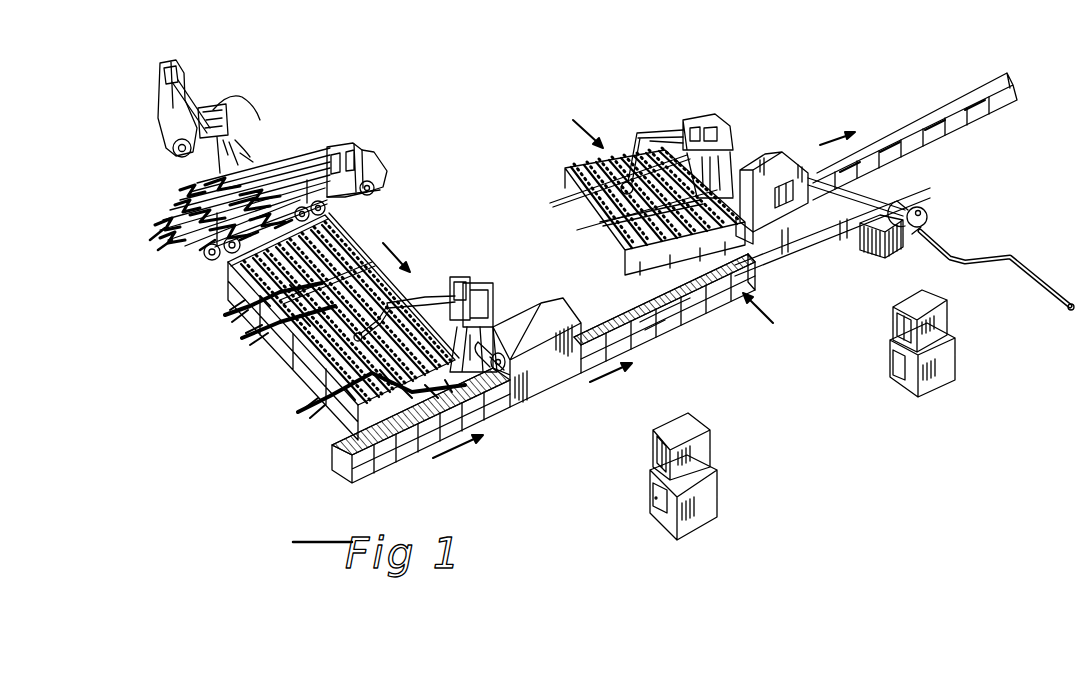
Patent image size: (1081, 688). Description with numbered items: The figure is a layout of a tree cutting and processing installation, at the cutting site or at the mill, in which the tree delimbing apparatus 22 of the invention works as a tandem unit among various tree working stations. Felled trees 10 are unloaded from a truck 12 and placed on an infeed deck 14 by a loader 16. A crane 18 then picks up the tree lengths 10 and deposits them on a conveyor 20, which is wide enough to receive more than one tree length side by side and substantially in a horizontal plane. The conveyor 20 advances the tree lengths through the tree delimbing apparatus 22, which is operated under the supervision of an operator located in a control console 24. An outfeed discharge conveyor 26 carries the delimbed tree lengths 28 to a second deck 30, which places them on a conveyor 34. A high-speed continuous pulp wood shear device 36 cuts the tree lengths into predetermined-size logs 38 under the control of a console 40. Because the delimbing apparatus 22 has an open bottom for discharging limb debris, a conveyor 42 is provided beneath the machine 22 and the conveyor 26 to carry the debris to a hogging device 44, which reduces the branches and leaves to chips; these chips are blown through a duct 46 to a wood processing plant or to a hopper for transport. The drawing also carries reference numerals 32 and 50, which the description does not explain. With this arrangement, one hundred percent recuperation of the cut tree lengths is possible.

The felled trees 10 is at (281, 160).
The truck 12 is at (356, 152).
The infeed deck 14 is at (356, 239).
The loader 16 is at (203, 80).
The crane 18 is at (427, 296).
The conveyor 20 is at (332, 447).
The tree delimbing apparatus 22 is at (518, 308).
The control console 24 is at (707, 430).
The outfeed discharge conveyor 26 is at (641, 313).
The delimbed tree lengths 28 is at (699, 287).
The second deck 30 is at (742, 227).
The second crane 32 is at (707, 116).
The conveyor 34 is at (621, 254).
The high-speed continuous pulp wood shear device 36 is at (767, 157).
The predetermined-size logs 38 is at (910, 120).
The console 40 is at (945, 307).
The conveyor 42 is at (660, 318).
The hogging device 44 is at (931, 199).
The duct 46 is at (1028, 261).
The roller 50 is at (510, 364).